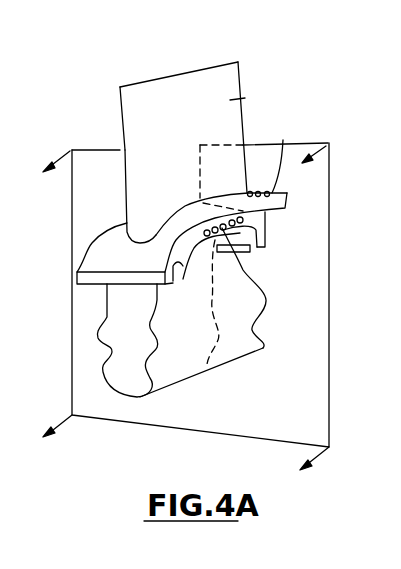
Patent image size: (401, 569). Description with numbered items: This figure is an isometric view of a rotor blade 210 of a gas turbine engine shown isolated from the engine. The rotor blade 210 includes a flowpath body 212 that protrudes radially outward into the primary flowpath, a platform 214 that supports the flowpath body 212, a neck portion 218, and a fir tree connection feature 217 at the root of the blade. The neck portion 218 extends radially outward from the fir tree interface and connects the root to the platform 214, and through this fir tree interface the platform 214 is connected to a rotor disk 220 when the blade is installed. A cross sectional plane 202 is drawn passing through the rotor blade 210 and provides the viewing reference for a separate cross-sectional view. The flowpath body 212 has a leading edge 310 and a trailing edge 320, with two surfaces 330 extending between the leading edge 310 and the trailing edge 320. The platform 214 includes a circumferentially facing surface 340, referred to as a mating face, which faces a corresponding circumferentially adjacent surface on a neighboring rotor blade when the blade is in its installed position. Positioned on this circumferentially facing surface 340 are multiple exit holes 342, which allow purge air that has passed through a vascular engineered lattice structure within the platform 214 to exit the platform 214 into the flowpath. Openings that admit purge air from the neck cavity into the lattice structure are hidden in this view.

The cross sectional plane 202 is at (329, 161).
The rotor blade 210 is at (293, 117).
The flowpath body 212 is at (242, 99).
The platform 214 is at (281, 145).
The fir tree connection feature 217 is at (262, 345).
The neck portion 218 is at (247, 257).
The rotor disk 220 is at (390, 470).
The leading edge 310 is at (125, 140).
The trailing edge 320 is at (240, 63).
The surfaces 330 is at (173, 97).
The circumferentially facing surface 340 is at (268, 218).
The exit holes 342 is at (262, 285).